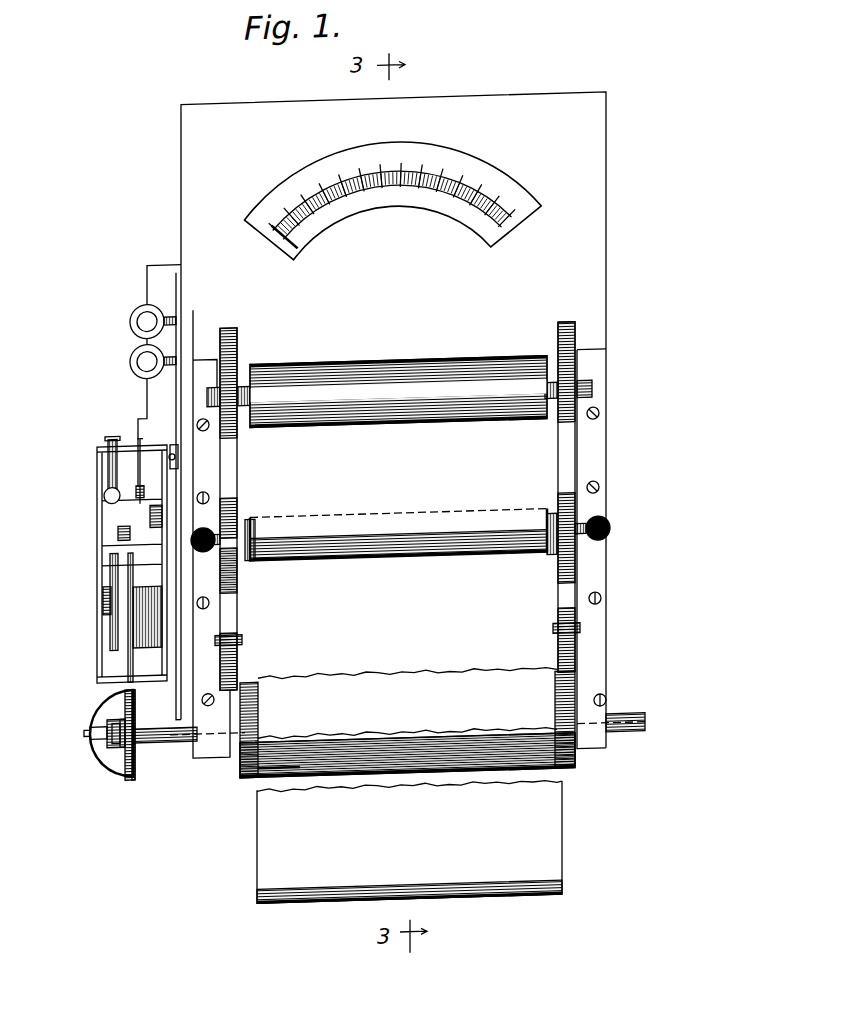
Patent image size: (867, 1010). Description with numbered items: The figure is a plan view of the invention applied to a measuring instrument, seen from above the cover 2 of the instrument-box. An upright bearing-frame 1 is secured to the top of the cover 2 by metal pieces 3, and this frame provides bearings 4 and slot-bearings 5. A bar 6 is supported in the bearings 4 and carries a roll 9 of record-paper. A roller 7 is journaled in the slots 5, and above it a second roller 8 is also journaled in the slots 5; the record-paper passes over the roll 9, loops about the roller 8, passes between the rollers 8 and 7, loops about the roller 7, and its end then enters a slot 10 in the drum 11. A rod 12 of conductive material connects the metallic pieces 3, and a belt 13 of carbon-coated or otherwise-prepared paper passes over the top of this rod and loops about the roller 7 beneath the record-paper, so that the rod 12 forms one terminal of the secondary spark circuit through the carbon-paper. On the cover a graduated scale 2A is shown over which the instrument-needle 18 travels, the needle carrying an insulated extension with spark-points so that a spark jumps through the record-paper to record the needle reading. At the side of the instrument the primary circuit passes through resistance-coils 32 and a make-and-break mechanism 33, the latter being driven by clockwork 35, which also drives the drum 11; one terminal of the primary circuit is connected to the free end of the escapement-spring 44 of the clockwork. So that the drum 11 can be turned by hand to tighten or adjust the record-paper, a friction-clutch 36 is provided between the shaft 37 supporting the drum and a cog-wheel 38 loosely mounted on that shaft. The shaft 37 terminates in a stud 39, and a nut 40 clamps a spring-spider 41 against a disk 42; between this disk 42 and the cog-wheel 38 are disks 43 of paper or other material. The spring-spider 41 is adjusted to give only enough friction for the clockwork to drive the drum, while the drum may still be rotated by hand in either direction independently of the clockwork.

The upright bearing-frame 1 is at (230, 340).
The cover 2 is at (585, 250).
The graduated scale 2A is at (450, 206).
The metal pieces 3 is at (205, 761).
The bearings 4 is at (232, 387).
The slot-bearings 5 is at (235, 537).
The bar 6 is at (590, 406).
The roller 7 is at (610, 558).
The roller 8 is at (548, 579).
The roll of record-paper 9 is at (378, 381).
The slot 10 is at (258, 768).
The drum 11 is at (258, 786).
The rod 12 is at (240, 644).
The belt 13 is at (552, 812).
The needle 18 is at (283, 246).
The resistance-coils 32 is at (147, 370).
The make-and-break mechanism 33 is at (112, 480).
The clockwork 35 is at (140, 610).
The friction-clutch 36 is at (118, 698).
The shaft 37 is at (165, 750).
The cog-wheel 38 is at (135, 786).
The stud 39 is at (92, 741).
The nut 40 is at (107, 753).
The spring-spider 41 is at (114, 758).
The disk 42 is at (125, 779).
The disks 43 is at (130, 784).
The escapement-spring 44 is at (135, 466).